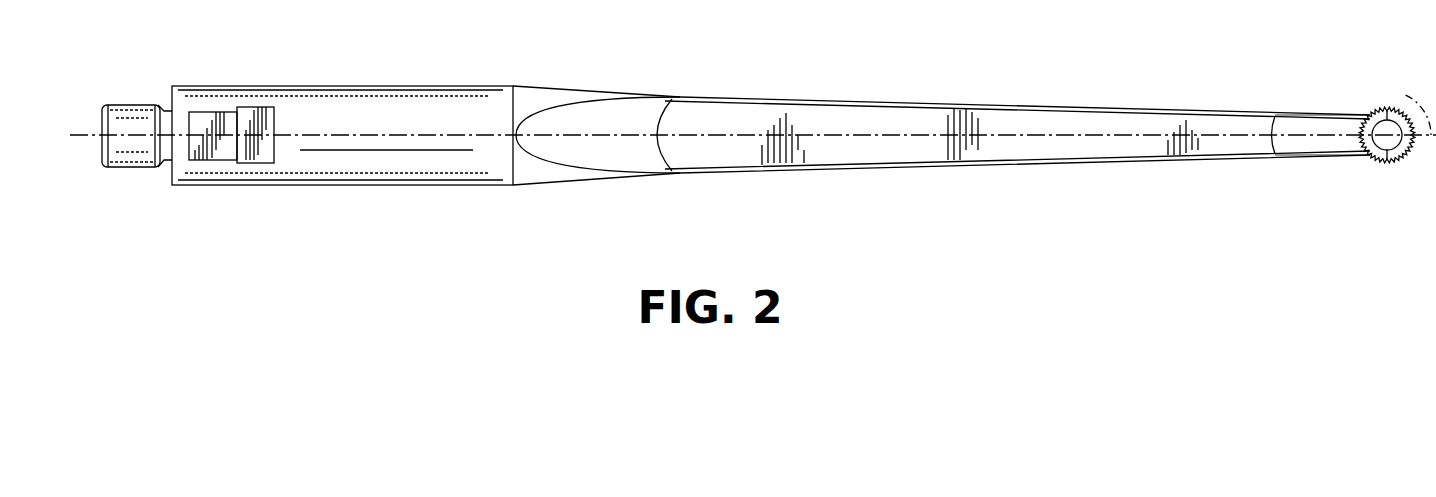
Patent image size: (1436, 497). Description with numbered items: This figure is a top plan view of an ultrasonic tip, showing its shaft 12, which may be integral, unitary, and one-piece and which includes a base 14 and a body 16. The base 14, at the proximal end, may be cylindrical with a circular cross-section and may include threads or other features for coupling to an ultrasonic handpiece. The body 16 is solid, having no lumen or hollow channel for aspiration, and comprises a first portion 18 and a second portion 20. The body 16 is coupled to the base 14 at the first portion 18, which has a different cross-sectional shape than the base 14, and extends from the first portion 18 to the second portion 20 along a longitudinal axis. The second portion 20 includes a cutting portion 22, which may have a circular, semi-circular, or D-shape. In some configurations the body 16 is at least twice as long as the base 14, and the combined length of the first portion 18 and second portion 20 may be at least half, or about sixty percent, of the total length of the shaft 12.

The shaft 12 is at (1415, 68).
The base 14 is at (390, 163).
The body 16 is at (893, 150).
The first portion 18 is at (575, 198).
The second portion 20 is at (1349, 161).
The cutting portion 22 is at (1347, 177).